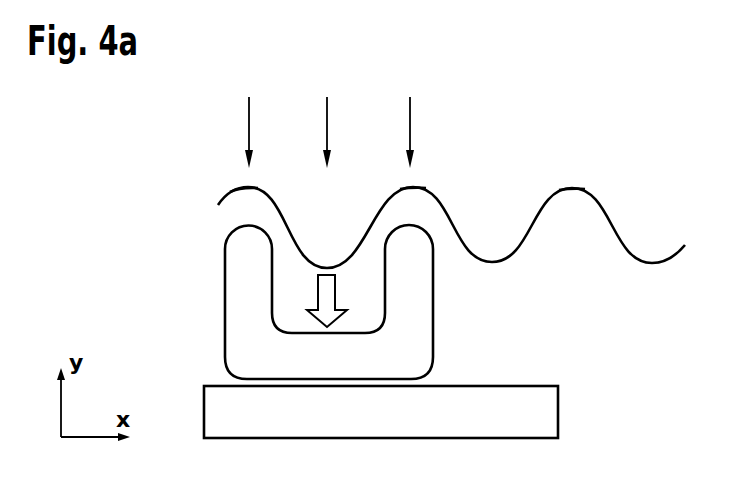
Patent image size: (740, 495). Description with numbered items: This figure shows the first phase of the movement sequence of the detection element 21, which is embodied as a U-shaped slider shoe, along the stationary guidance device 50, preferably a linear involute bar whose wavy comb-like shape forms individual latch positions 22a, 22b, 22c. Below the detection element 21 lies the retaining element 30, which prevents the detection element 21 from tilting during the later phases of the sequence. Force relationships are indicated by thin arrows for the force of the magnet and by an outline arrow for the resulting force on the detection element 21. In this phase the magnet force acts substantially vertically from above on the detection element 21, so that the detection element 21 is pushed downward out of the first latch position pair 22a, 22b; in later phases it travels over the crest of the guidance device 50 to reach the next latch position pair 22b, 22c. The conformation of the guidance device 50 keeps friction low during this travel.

The detection element 21 is at (434, 313).
The latch position 22a is at (248, 187).
The latch position 22b is at (413, 187).
The latch position 22c is at (572, 188).
The retaining element 30 is at (559, 418).
The stationary guidance device 50 is at (652, 264).